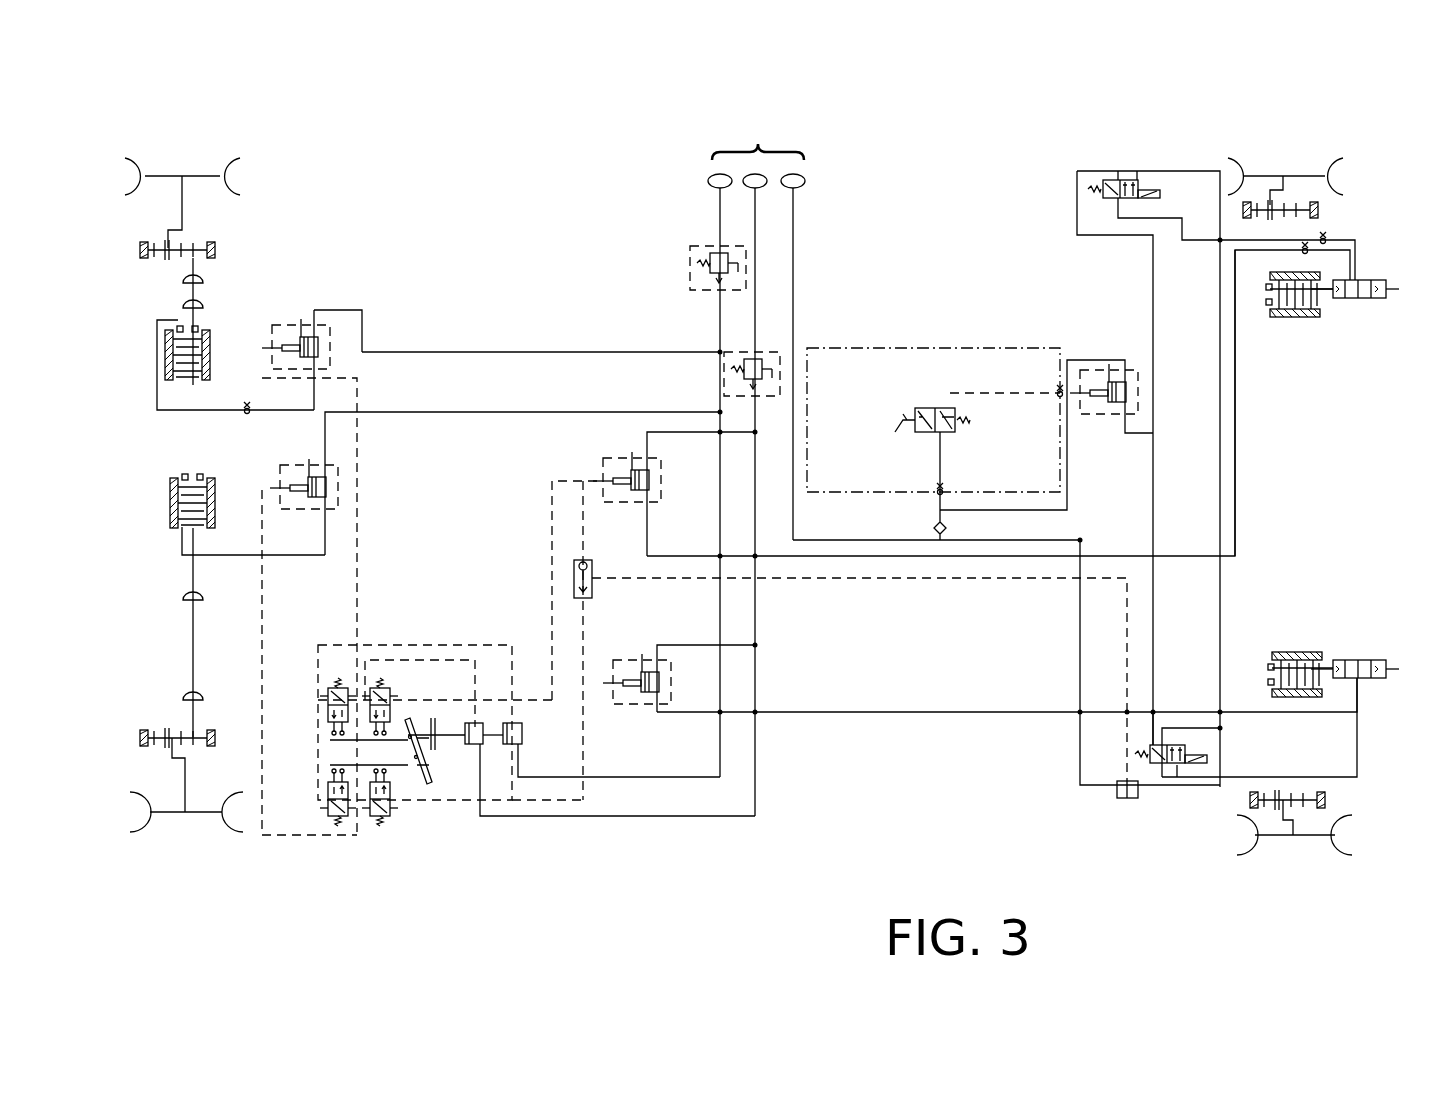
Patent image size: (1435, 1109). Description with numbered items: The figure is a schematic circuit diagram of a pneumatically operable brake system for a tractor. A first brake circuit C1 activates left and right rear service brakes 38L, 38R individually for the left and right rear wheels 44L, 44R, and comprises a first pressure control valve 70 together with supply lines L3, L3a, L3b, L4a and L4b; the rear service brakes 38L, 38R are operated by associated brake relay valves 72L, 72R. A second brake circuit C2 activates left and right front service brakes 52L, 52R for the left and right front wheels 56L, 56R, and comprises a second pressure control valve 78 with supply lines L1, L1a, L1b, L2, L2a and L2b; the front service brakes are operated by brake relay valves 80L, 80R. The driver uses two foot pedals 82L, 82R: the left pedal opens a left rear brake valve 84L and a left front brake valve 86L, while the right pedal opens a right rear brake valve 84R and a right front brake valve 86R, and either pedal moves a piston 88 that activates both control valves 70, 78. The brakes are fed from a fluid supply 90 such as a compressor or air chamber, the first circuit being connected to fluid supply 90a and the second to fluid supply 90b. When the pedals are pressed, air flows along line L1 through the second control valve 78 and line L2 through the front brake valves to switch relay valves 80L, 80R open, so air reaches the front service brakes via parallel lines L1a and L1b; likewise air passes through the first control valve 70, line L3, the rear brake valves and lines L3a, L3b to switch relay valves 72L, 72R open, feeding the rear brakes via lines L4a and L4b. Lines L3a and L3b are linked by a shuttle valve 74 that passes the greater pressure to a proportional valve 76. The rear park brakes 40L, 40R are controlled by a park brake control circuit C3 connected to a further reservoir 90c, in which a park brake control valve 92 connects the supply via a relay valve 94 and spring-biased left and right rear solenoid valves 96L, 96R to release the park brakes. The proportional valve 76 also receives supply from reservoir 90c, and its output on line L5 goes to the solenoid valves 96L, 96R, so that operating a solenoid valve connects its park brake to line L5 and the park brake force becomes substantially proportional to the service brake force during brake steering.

The right front wheel 56R is at (168, 185).
The left front wheel 56L is at (175, 812).
The right front service brake 52R is at (206, 352).
The left front service brake 52L is at (188, 500).
The right brake relay valve 80R is at (290, 340).
The left brake relay valve 80L is at (292, 480).
The right front brake valve 86R is at (330, 705).
The left front brake valve 86L is at (330, 805).
The right rear brake valve 84R is at (386, 690).
The left rear brake valve 84L is at (386, 812).
The right foot pedal 82R is at (426, 757).
The left foot pedal 82L is at (428, 780).
The piston 88 is at (460, 724).
The first pressure control valve 70 is at (480, 744).
The second pressure control valve 78 is at (522, 735).
The shuttle valve 74 is at (590, 568).
The right brake relay valve 72R is at (618, 472).
The left brake relay valve 72L is at (632, 672).
The fluid supply 90 is at (758, 137).
The fluid supply 90a is at (758, 180).
The fluid supply 90b is at (706, 183).
The reservoir 90c is at (806, 182).
The park brake control valve 92 is at (928, 410).
The relay valve 94 is at (1110, 402).
The right rear solenoid valve 96R is at (1125, 182).
The left rear solenoid valve 96L is at (1175, 762).
The proportional valve 76 is at (1125, 798).
The right rear wheel 44R is at (1298, 176).
The left rear wheel 44L is at (1285, 835).
The right rear service brake 38R is at (1340, 298).
The left rear service brake 38L is at (1338, 665).
The right rear park brake 40R is at (1375, 298).
The left rear park brake 40L is at (1375, 665).
The supply line L1 is at (720, 325).
The supply line L1a is at (428, 412).
The supply line L1b is at (416, 352).
The supply line L2 is at (488, 645).
The supply line L2a is at (262, 612).
The supply line L2b is at (373, 533).
The supply line L3 is at (428, 612).
The supply line L3a is at (583, 716).
The supply line L3b is at (552, 540).
The supply line L4a is at (835, 712).
The supply line L4b is at (683, 556).
The line L5 is at (1220, 612).
The first brake circuit C1 is at (755, 625).
The second brake circuit C2 is at (690, 778).
The park brake control circuit C3 is at (993, 542).